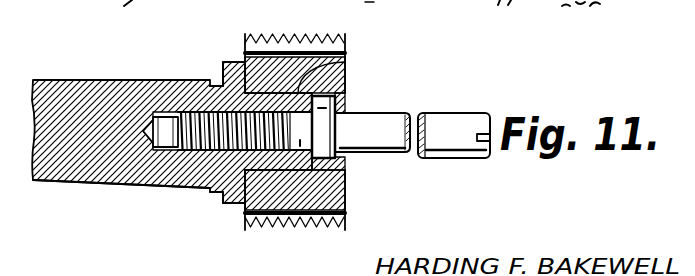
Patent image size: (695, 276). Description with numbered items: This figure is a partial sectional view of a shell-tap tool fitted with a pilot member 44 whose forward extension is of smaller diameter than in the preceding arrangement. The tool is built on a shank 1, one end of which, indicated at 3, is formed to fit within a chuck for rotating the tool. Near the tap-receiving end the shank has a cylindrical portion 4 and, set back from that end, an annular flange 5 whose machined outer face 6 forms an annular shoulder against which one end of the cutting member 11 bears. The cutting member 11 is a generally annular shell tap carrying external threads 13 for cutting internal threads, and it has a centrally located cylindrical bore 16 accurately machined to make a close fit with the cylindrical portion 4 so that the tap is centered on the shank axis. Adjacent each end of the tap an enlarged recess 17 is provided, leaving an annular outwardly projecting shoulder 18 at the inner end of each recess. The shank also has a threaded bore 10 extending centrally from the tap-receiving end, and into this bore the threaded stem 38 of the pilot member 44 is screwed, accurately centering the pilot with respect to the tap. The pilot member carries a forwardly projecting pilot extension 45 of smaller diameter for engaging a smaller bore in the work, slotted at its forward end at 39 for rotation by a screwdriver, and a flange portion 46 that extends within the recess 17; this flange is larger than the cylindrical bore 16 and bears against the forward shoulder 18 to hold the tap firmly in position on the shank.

The shank 1 is at (101, 80).
The chuck-fitting portion of the shank 3 is at (70, 175).
The cylindrical portion 4 is at (287, 158).
The annular flange 5 is at (233, 62).
The outer face of the flange 6 is at (230, 205).
The threaded bore 10 is at (192, 111).
The cutting member 11 is at (307, 34).
The external threads 13 is at (340, 228).
The cylindrical bore 16 is at (300, 92).
The recess 17 is at (262, 90).
The shoulder 18 is at (317, 214).
The threaded stem 38 is at (301, 150).
The slot 39 is at (490, 138).
The pilot member 44 is at (411, 113).
The pilot extension 45 is at (462, 115).
The flange portion 46 is at (328, 110).